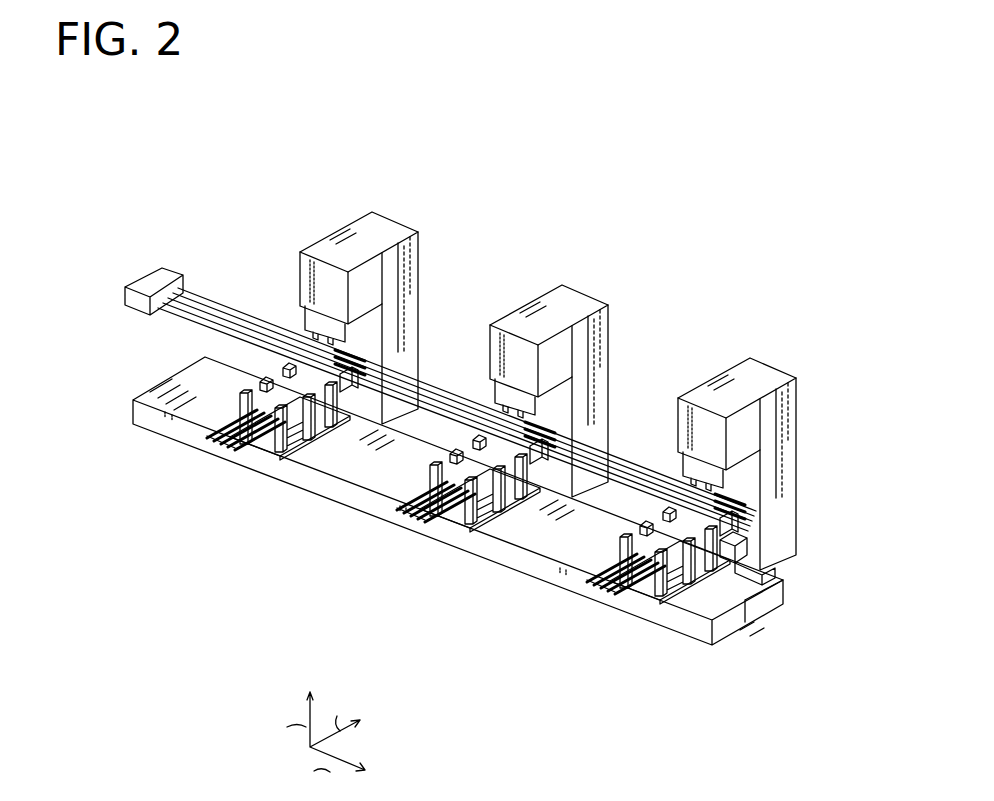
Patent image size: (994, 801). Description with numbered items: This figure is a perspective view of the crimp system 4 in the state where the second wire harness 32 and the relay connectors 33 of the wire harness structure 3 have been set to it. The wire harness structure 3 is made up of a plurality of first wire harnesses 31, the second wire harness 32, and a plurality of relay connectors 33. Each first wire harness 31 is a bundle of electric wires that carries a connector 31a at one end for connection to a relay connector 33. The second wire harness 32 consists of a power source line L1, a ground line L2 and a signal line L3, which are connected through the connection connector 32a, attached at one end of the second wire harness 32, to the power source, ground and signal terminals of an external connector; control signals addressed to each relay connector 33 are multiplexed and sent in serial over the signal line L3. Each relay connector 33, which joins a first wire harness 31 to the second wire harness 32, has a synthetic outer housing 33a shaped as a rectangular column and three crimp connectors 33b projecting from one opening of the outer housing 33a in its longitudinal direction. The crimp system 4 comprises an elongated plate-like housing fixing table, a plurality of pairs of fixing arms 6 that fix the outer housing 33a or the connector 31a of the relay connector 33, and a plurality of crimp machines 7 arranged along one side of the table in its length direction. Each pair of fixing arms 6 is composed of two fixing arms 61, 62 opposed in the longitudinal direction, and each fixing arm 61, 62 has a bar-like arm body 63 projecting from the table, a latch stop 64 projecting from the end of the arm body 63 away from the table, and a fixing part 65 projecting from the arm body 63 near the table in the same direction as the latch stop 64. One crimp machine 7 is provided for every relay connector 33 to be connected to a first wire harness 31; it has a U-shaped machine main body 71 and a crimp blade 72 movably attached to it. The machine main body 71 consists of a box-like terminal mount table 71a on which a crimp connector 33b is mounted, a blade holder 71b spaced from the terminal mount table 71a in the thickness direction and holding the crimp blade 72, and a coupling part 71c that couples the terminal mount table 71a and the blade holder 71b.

The crimp system 4 is at (650, 147).
The wire harness structure 3 is at (461, 434).
The pair of fixing arms 6 is at (457, 521).
The crimp machine 7 is at (400, 209).
The first wire harness 31 is at (218, 455).
The connector 31a is at (278, 447).
The second wire harness 32 is at (150, 201).
The connection connector 32a is at (152, 279).
The relay connector 33 is at (302, 452).
The outer housing 33a is at (300, 395).
The crimp connector 33b is at (345, 458).
The fixing arm 61 is at (232, 410).
The fixing arm 62 is at (290, 447).
The arm body 63 is at (760, 572).
The latch stop 64 is at (735, 548).
The fixing part 65 is at (768, 586).
The machine main body 71 is at (483, 232).
The terminal mount table 71a is at (416, 377).
The blade holder 71b is at (363, 287).
The coupling part 71c is at (401, 318).
The crimp blade 72 is at (311, 322).
The power source line L1 is at (186, 287).
The ground line L2 is at (205, 307).
The signal line L3 is at (222, 325).